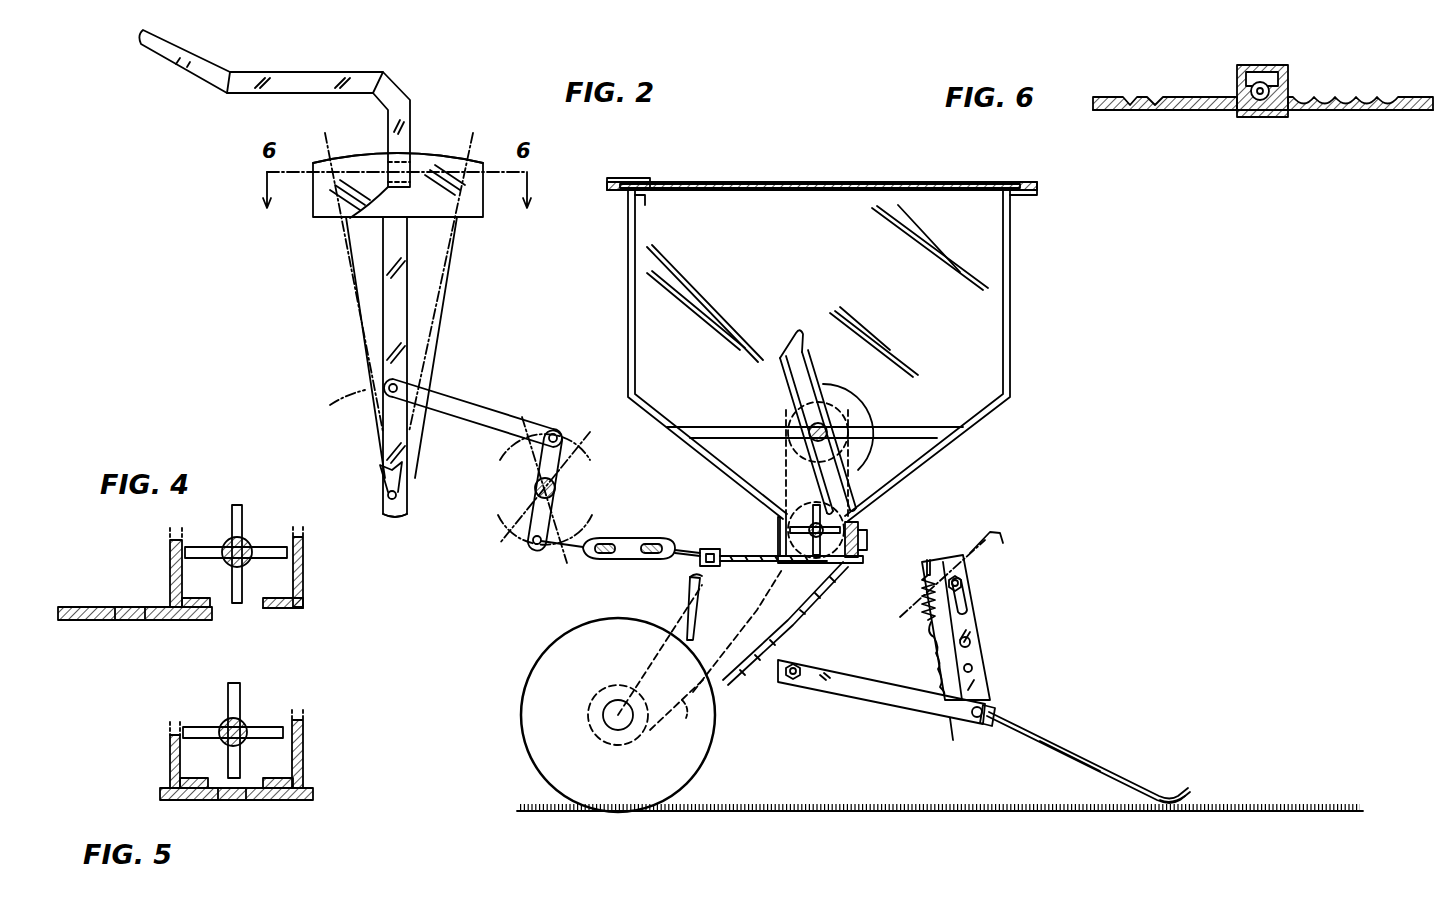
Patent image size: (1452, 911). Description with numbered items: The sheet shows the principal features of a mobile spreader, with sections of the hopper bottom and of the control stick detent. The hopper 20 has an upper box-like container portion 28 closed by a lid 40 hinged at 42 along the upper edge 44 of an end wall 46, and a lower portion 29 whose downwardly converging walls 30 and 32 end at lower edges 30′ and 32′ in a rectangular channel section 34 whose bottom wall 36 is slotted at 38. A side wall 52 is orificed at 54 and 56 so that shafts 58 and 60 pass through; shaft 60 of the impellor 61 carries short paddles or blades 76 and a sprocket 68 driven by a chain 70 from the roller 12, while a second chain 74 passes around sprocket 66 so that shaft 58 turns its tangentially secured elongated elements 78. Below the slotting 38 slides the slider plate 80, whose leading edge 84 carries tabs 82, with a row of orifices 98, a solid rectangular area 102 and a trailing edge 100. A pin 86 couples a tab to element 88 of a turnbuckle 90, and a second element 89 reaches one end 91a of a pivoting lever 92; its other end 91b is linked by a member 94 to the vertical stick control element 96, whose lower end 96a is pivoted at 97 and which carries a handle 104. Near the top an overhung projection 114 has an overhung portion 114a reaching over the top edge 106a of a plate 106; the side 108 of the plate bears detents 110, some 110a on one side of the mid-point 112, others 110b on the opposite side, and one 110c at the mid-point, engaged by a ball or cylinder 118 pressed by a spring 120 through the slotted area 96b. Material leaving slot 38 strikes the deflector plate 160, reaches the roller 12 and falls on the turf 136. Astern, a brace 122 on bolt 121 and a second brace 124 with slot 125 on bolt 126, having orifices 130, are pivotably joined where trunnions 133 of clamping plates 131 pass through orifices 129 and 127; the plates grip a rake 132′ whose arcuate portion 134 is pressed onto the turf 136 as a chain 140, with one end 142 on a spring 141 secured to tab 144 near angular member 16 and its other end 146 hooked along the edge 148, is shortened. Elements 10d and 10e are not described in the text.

In FIG. 2, the handle 104 is at (300, 72).
In FIG. 2, the overhung projection 114 is at (412, 135).
In FIG. 2, the plate 106 is at (430, 165).
In FIG. 6, the plate 106 is at (1205, 112).
In FIG. 2, the top edge of the plate 106a is at (356, 162).
In FIG. 2, the overhung portion 114a is at (352, 218).
In FIG. 6, the overhung portion 114a is at (1290, 116).
In FIG. 2, the vertical stick control element 96 is at (412, 302).
In FIG. 6, the vertical stick control element 96 is at (1290, 93).
In FIG. 2, the pivot of the control stick 97 is at (400, 494).
In FIG. 2, the lower end of the control stick 96a is at (408, 514).
In FIG. 6, the lower end of the control stick 96a is at (1242, 80).
In FIG. 2, the member 94 is at (465, 405).
In FIG. 2, the other end of the pivoting lever 91b is at (555, 432).
In FIG. 2, the pivoting lever 92 is at (555, 507).
In FIG. 2, the one end of the pivoting lever 91a is at (530, 545).
In FIG. 2, the second element 89 is at (568, 552).
In FIG. 2, the turnbuckle 90 is at (626, 541).
In FIG. 2, the element of the turnbuckle 88 is at (684, 550).
In FIG. 2, the pin 86 is at (714, 550).
In FIG. 2, the tabs 82 is at (740, 567).
In FIG. 2, the row of orifices 98 is at (772, 568).
In FIG. 4, the row of orifices 98 is at (128, 622).
In FIG. 5, the row of orifices 98 is at (234, 801).
In FIG. 2, the lower edge of wall 32 32′ is at (778, 536).
In FIG. 4, the lower edge of wall 32 32′ is at (170, 560).
In FIG. 5, the lower edge of wall 32 32′ is at (170, 750).
In FIG. 2, the lower edge of wall 30 30′ is at (862, 536).
In FIG. 4, the lower edge of wall 30 30′ is at (303, 560).
In FIG. 5, the lower edge of wall 30 30′ is at (303, 740).
In FIG. 2, the orifice 56 is at (868, 545).
In FIG. 2, the paddles or blades 76 is at (862, 526).
In FIG. 4, the paddles or blades 76 is at (243, 515).
In FIG. 5, the paddles or blades 76 is at (250, 722).
In FIG. 2, the shaft 60 is at (830, 507).
In FIG. 4, the shaft 60 is at (252, 546).
In FIG. 5, the shaft 60 is at (233, 732).
In FIG. 2, the sprocket 68 is at (802, 503).
In FIG. 2, the second chain 74 is at (850, 466).
In FIG. 2, the sprocket 66 is at (846, 402).
In FIG. 2, the shaft 58 is at (830, 432).
In FIG. 2, the orifice 54 is at (870, 436).
In FIG. 2, the elongated elements 78 is at (800, 338).
In FIG. 2, the hopper 20 is at (1012, 248).
In FIG. 2, the side wall 52 is at (1005, 292).
In FIG. 2, the lid 40 is at (825, 180).
In FIG. 2, the hinge 42 is at (636, 177).
In FIG. 2, the upper edge of the end wall 44 is at (648, 201).
In FIG. 2, the end wall 46 is at (628, 230).
In FIG. 2, the upper rectangular box-like container portion 28 is at (975, 170).
In FIG. 2, the downwardly converging wall 32 is at (690, 440).
In FIG. 2, the downwardly converging wall 30 is at (930, 466).
In FIG. 2, the lower portion of the hopper 29 is at (985, 440).
In FIG. 2, the rectangular channel section 34 is at (865, 562).
In FIG. 4, the rectangular channel section 34 is at (303, 602).
In FIG. 5, the rectangular channel section 34 is at (303, 762).
In FIG. 2, the slider plate 80 is at (827, 588).
In FIG. 4, the slider plate 80 is at (80, 630).
In FIG. 5, the slider plate 80 is at (166, 804).
In FIG. 2, the slotting 38 is at (738, 630).
In FIG. 4, the slotting 38 is at (255, 605).
In FIG. 5, the slotting 38 is at (266, 778).
In FIG. 2, the hook 10e is at (688, 604).
In FIG. 2, the bracket 10d is at (690, 578).
In FIG. 2, the deflector plate 160 is at (770, 648).
In FIG. 2, the roller 12 is at (586, 631).
In FIG. 2, the chain 70 is at (682, 724).
In FIG. 2, the turf 136 is at (1225, 810).
In FIG. 2, the bolt 121 is at (778, 675).
In FIG. 2, the rearwardly projecting brace 122 is at (830, 690).
In FIG. 2, the chain 140 is at (870, 716).
In FIG. 2, the edge of the clamping plates 148 is at (900, 710).
In FIG. 2, the trunnion 133 is at (907, 730).
In FIG. 2, the other end of the chain 146 is at (955, 738).
In FIG. 2, the orifice 127 is at (985, 724).
In FIG. 2, the orifice 129 is at (992, 706).
In FIG. 2, the clamping plates 131 is at (1005, 720).
In FIG. 2, the rake 132′ is at (1062, 766).
In FIG. 2, the arcuate portion 134 is at (1175, 790).
In FIG. 2, the second downwardly directed brace 124 is at (985, 652).
In FIG. 2, the slot 125 is at (968, 606).
In FIG. 2, the bolt 126 is at (968, 586).
In FIG. 2, the additional orifices 130 is at (975, 670).
In FIG. 2, the laterally projecting tab 144 is at (940, 555).
In FIG. 2, the angular member 16 is at (1003, 543).
In FIG. 2, the spring 141 is at (920, 596).
In FIG. 2, the end of the chain 142 is at (935, 662).
In FIG. 4, the impellor 61 is at (246, 498).
In FIG. 5, the impellor 61 is at (236, 690).
In FIG. 4, the bottom wall 36 is at (285, 611).
In FIG. 5, the bottom wall 36 is at (280, 792).
In FIG. 4, the leading edge 84 is at (60, 612).
In FIG. 5, the leading edge 84 is at (160, 795).
In FIG. 4, the solid rectangular area 102 is at (172, 622).
In FIG. 5, the solid rectangular area 102 is at (300, 776).
In FIG. 4, the trailing edge 100 is at (210, 620).
In FIG. 5, the trailing edge 100 is at (313, 796).
In FIG. 6, the side of the plate 108 is at (1102, 97).
In FIG. 6, the indentations or detents 110 is at (1130, 97).
In FIG. 6, the indentations 110a is at (1155, 108).
In FIG. 6, the indentations 110b is at (1400, 97).
In FIG. 6, the spring 120 is at (1256, 72).
In FIG. 6, the ball or cylinder 118 is at (1290, 76).
In FIG. 6, the slotted area 96b is at (1248, 114).
In FIG. 6, the indentation 110c is at (1268, 118).
In FIG. 6, the mid-point 112 is at (1285, 108).